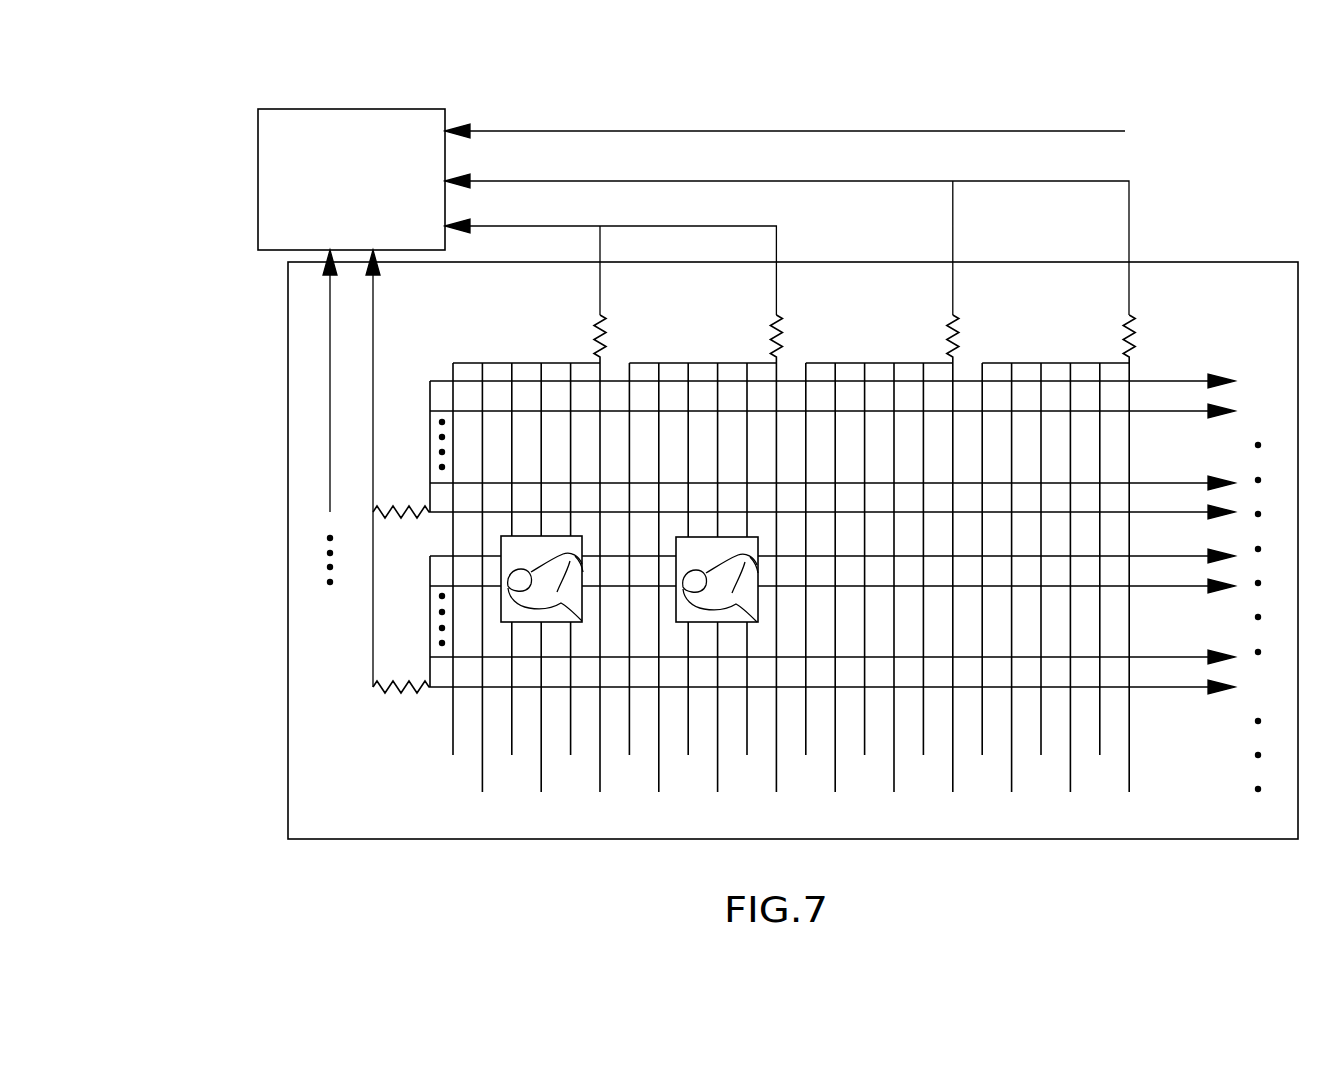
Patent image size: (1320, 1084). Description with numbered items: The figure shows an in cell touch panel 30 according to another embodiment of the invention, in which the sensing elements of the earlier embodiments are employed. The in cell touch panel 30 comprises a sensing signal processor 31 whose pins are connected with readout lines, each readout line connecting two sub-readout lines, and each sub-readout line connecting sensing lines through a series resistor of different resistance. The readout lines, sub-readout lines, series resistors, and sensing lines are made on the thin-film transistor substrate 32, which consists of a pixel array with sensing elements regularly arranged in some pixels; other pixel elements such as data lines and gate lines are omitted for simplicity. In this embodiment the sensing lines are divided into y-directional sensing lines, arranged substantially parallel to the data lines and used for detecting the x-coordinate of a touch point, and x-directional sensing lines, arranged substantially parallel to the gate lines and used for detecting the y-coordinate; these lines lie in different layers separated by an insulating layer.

The in cell touch panel 30 is at (160, 163).
The sensing signal processor 31 is at (258, 214).
The thin-film transistor substrate 32 is at (288, 564).